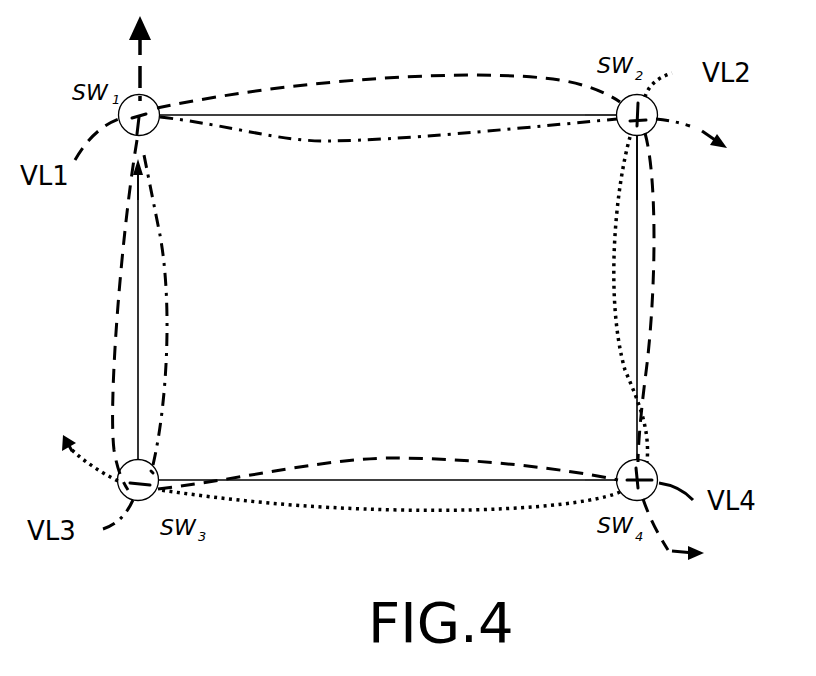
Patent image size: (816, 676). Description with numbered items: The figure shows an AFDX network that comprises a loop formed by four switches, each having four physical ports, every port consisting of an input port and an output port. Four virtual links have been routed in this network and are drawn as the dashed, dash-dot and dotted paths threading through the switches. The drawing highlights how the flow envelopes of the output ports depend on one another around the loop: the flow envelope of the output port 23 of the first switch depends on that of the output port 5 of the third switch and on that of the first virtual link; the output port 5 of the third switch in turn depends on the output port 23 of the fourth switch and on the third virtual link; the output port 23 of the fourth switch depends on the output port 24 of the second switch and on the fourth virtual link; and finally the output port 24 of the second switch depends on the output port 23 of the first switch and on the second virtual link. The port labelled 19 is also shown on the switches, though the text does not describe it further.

The output port 5 is at (385, 297).
The port 19 is at (377, 148).
The output port 23 is at (388, 297).
The output port 24 is at (397, 307).